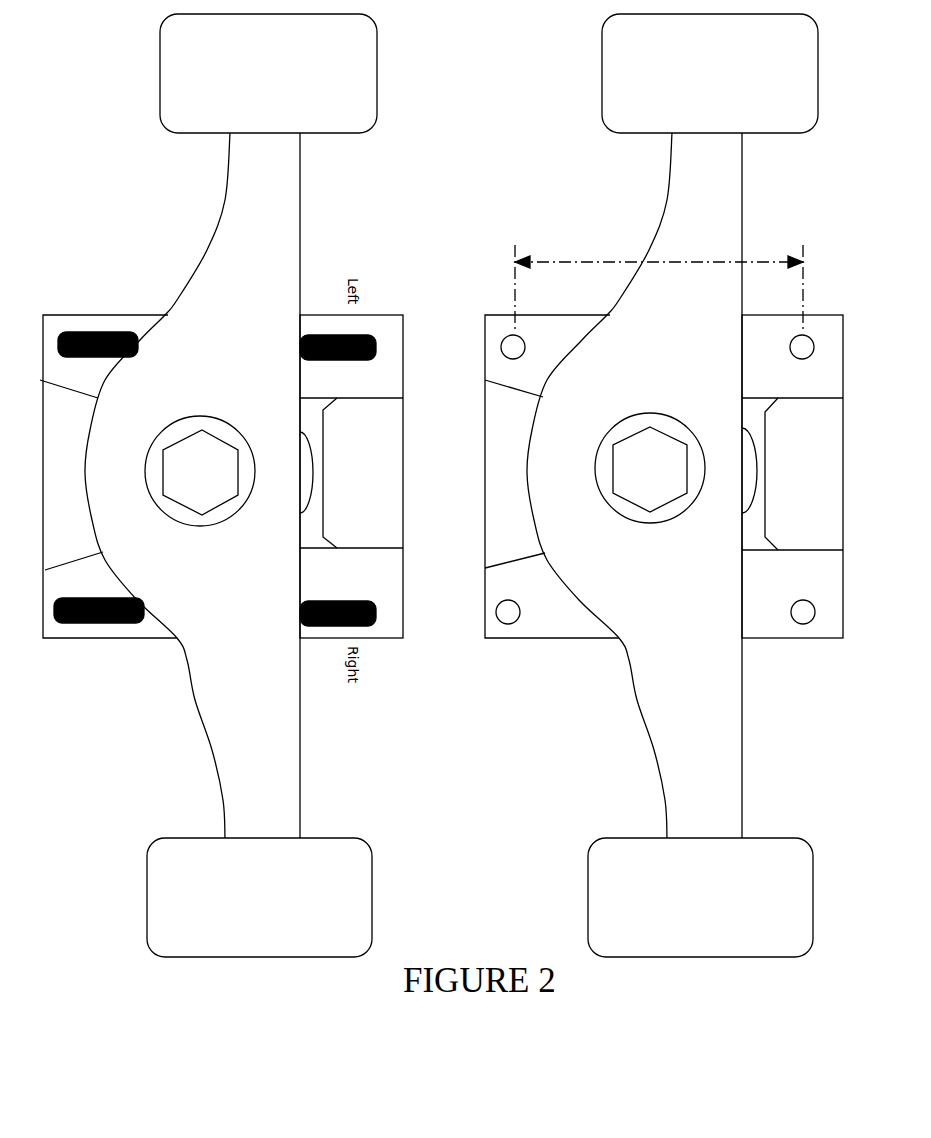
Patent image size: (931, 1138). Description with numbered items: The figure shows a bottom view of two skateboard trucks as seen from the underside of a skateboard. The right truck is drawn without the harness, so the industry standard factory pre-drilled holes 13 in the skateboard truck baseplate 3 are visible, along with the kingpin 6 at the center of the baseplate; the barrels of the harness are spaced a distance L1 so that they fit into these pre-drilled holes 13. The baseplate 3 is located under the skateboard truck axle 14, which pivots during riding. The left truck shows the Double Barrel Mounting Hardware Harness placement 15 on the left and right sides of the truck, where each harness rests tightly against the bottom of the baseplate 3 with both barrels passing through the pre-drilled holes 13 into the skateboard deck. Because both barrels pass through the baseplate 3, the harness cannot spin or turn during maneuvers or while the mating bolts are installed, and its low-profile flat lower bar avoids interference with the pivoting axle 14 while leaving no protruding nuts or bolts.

The barrel spacing L1 is at (625, 246).
The skateboard truck baseplate 3 is at (765, 345).
The pre-drilled holes 13 is at (805, 340).
The kingpin 6 is at (655, 473).
The skateboard truck axle 14 is at (675, 653).
The Double Barrel Mounting Hardware Harness placement 15 is at (363, 595).